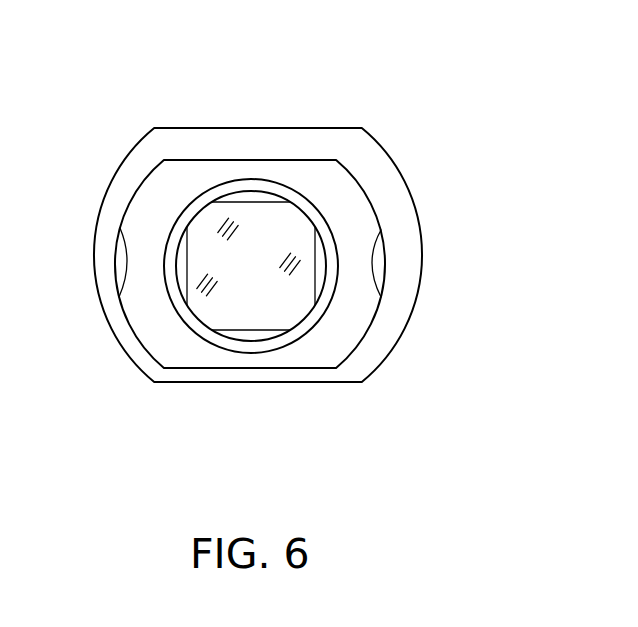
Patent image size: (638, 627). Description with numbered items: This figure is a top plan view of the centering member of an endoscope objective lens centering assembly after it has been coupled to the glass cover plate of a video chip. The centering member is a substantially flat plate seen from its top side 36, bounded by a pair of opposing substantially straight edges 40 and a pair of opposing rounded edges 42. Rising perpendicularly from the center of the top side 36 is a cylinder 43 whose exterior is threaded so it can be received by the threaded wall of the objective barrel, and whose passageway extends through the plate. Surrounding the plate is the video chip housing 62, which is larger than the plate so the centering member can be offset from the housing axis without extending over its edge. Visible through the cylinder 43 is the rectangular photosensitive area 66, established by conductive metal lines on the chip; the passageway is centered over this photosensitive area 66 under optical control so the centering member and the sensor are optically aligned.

The top side 36 is at (179, 353).
The substantially straight edges 40 is at (250, 160).
The rounded edges 42 is at (130, 195).
The cylinder 43 is at (312, 212).
The video chip housing 62 is at (98, 266).
The photosensitive area 66 is at (264, 280).